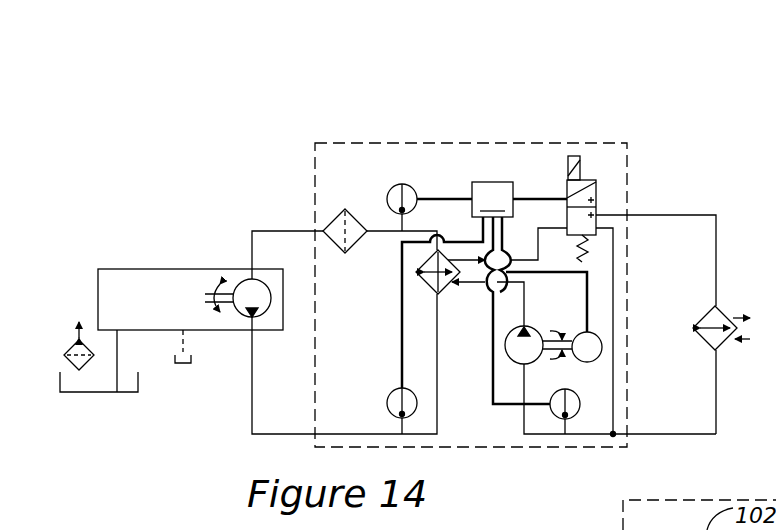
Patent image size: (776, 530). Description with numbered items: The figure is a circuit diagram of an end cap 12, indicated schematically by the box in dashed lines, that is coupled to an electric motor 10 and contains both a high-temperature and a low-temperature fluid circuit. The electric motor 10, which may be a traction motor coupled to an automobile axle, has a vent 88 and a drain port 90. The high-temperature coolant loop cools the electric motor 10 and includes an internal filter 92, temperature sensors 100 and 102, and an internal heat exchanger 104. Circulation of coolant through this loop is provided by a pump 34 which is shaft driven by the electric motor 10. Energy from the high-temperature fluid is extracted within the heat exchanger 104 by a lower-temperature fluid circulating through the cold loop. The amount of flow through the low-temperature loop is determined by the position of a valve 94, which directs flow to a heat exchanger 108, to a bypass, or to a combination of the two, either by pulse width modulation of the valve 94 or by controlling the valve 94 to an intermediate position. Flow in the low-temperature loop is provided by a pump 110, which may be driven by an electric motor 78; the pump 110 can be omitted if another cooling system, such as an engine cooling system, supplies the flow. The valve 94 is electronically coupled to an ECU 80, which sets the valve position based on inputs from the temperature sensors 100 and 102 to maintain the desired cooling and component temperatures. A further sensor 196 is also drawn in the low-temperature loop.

The electric motor 10 is at (130, 275).
The end cap 12 is at (633, 152).
The pump 34 is at (247, 315).
The electric motor 78 is at (597, 360).
The ECU 80 is at (492, 199).
The vent 88 is at (102, 395).
The drain port 90 is at (182, 367).
The filter 92 is at (337, 220).
The valve 94 is at (567, 193).
The temperature sensor 100 is at (388, 420).
The temperature sensor 102 is at (387, 193).
The internal heat exchanger 104 is at (448, 288).
The heat exchanger 108 is at (720, 312).
The pump 110 is at (535, 328).
The pressure sensor 196 is at (552, 417).